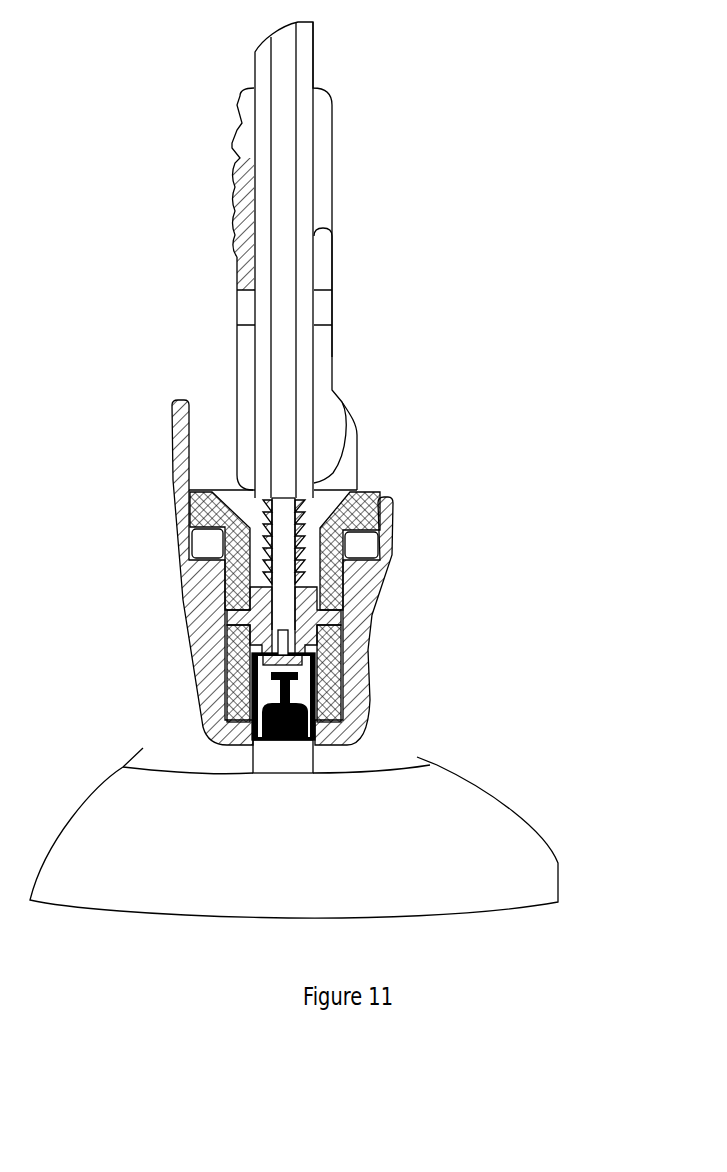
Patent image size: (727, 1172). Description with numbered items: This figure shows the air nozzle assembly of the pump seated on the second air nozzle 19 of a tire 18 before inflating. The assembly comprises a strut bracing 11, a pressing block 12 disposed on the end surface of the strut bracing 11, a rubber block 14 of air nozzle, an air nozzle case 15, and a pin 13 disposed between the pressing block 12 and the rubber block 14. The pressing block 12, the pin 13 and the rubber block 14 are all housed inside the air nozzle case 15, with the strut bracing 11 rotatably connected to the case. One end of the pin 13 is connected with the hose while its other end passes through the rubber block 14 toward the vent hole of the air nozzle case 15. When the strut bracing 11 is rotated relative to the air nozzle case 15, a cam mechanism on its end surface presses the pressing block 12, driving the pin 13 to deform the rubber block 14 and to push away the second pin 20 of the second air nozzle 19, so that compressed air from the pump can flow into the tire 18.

The strut bracing 11 is at (315, 427).
The pressing block 12 is at (365, 507).
The pin 13 is at (308, 597).
The rubber block of air nozzle 14 is at (333, 638).
The air nozzle case 15 is at (190, 600).
The tire 18 is at (445, 828).
The second air nozzle 19 is at (303, 685).
The second pin 20 is at (263, 697).